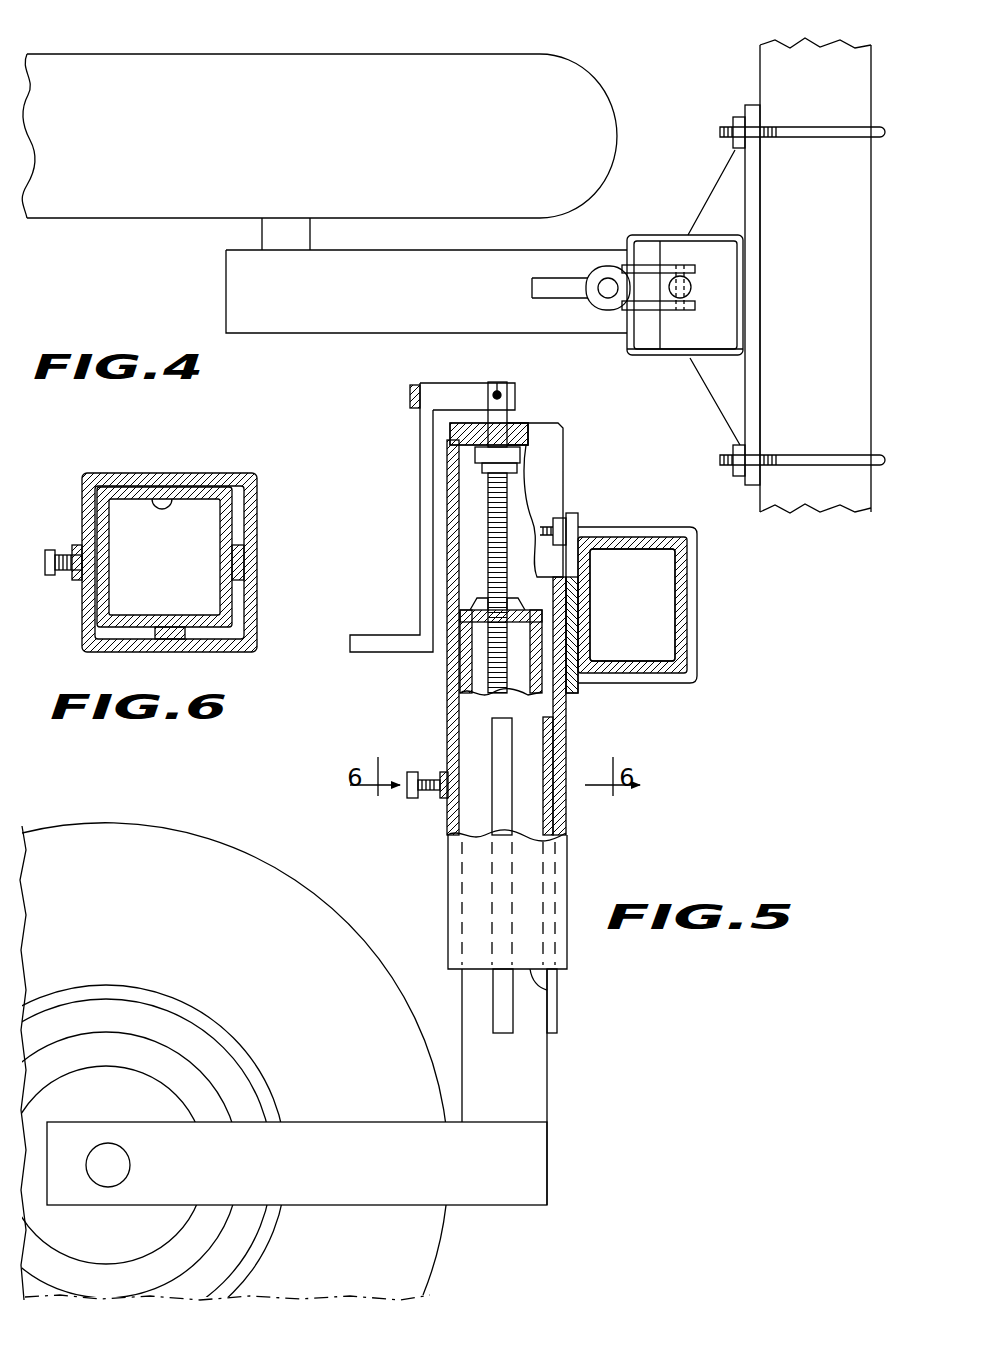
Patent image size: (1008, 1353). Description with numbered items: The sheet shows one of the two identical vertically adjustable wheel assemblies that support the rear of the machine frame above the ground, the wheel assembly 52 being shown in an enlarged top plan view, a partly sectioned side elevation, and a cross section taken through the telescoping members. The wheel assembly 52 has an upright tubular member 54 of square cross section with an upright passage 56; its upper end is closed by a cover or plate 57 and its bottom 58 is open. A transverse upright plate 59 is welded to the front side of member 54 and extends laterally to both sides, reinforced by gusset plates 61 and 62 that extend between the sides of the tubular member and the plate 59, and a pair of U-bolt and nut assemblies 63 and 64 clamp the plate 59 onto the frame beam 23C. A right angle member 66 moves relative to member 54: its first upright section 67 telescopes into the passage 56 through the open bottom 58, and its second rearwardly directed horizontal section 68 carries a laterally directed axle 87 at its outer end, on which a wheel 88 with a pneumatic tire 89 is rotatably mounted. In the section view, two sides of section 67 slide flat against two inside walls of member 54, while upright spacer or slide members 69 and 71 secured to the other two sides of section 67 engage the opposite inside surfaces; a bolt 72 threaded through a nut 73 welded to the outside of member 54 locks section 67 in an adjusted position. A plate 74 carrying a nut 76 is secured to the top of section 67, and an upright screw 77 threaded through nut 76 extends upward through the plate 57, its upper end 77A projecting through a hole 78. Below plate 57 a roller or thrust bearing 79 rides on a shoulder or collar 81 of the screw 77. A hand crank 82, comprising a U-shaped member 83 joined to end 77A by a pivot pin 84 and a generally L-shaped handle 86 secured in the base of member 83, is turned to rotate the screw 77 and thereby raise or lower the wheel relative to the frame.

In FIG. 4, the frame beam 23C is at (863, 482).
In FIG. 5, the frame beam 23C is at (662, 615).
In FIG. 4, the wheel assembly 52 is at (664, 100).
In FIG. 4, the upright tubular member 54 is at (648, 356).
In FIG. 5, the upright tubular member 54 is at (553, 456).
In FIG. 6, the upright tubular member 54 is at (250, 492).
In FIG. 5, the upright passage 56 is at (520, 516).
In FIG. 4, the cover or plate 57 is at (665, 337).
In FIG. 5, the cover or plate 57 is at (527, 430).
In FIG. 5, the bottom 58 is at (556, 990).
In FIG. 4, the transverse upright plate 59 is at (752, 395).
In FIG. 5, the transverse upright plate 59 is at (578, 690).
In FIG. 4, the gusset plate 61 is at (717, 386).
In FIG. 4, the gusset plate 62 is at (728, 181).
In FIG. 4, the U-bolt and nut assembly 63 is at (827, 130).
In FIG. 5, the U-bolt and nut assembly 63 is at (662, 535).
In FIG. 4, the U-bolt and nut assembly 64 is at (818, 457).
In FIG. 5, the right angle member 66 is at (550, 1128).
In FIG. 5, the first upright section 67 is at (523, 1085).
In FIG. 6, the first upright section 67 is at (165, 500).
In FIG. 4, the second horizontal section 68 is at (338, 316).
In FIG. 5, the second horizontal section 68 is at (350, 1126).
In FIG. 5, the slide member 69 is at (500, 1005).
In FIG. 6, the slide member 69 is at (172, 637).
In FIG. 5, the slide member 71 is at (553, 1021).
In FIG. 6, the slide member 71 is at (246, 562).
In FIG. 5, the bolt 72 is at (416, 773).
In FIG. 6, the bolt 72 is at (52, 576).
In FIG. 5, the nut 73 is at (442, 799).
In FIG. 6, the nut 73 is at (76, 548).
In FIG. 5, the plate 74 is at (532, 610).
In FIG. 5, the nut 76 is at (485, 598).
In FIG. 5, the upright screw 77 is at (490, 672).
In FIG. 5, the upper end 77A is at (494, 382).
In FIG. 5, the hole 78 is at (520, 425).
In FIG. 5, the bearing 79 is at (525, 447).
In FIG. 5, the shoulder or collar 81 is at (518, 468).
In FIG. 4, the hand crank 82 is at (578, 272).
In FIG. 5, the hand crank 82 is at (410, 528).
In FIG. 4, the U-shaped member 83 is at (668, 264).
In FIG. 5, the U-shaped member 83 is at (445, 387).
In FIG. 4, the pivot pin 84 is at (686, 264).
In FIG. 5, the pivot pin 84 is at (500, 394).
In FIG. 5, the L-shaped handle 86 is at (420, 449).
In FIG. 4, the axle 87 is at (262, 244).
In FIG. 5, the axle 87 is at (112, 1158).
In FIG. 5, the wheel 88 is at (128, 1031).
In FIG. 4, the pneumatic tire 89 is at (463, 68).
In FIG. 5, the pneumatic tire 89 is at (288, 893).